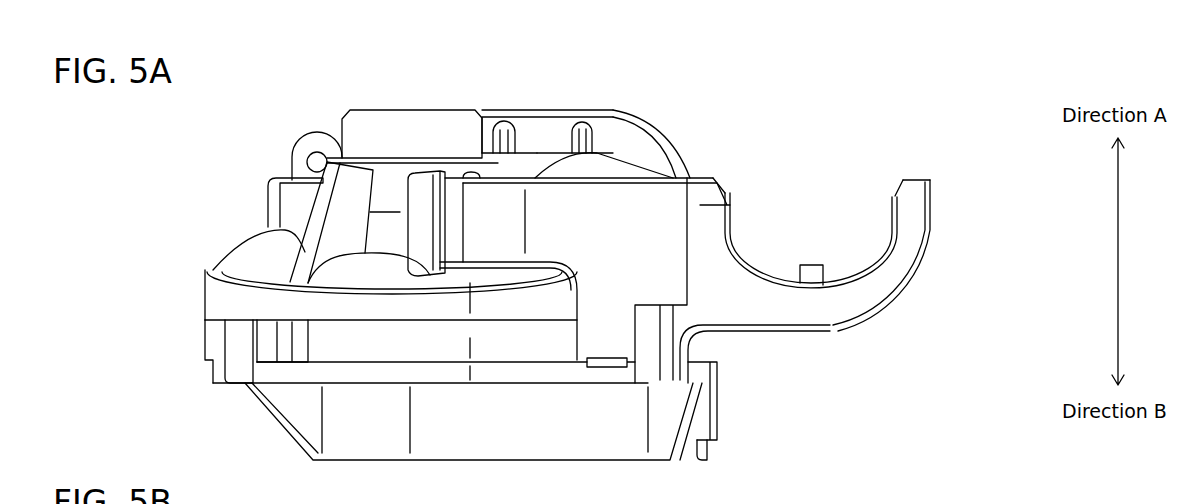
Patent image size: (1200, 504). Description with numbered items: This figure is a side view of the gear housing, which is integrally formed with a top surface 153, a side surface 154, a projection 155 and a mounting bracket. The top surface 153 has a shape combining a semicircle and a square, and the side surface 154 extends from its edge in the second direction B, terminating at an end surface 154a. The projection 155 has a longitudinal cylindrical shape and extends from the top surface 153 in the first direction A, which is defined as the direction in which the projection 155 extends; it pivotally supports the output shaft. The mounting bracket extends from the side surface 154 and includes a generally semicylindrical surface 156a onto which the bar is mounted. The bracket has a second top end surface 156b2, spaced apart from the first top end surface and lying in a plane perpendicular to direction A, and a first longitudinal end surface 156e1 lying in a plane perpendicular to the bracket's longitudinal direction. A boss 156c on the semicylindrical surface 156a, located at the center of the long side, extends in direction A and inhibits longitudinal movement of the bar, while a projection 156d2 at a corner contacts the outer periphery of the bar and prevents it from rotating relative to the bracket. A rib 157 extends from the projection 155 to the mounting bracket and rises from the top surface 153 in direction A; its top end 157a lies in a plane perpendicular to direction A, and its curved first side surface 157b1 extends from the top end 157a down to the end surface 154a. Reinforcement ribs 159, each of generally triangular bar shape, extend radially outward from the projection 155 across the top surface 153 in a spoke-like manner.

The top surface 153 is at (258, 273).
The side surface 154 is at (273, 310).
The end surface 154a is at (585, 362).
The projection 155 is at (362, 130).
The semicylindrical surface 156a is at (855, 273).
The second top end surface 156b2 is at (912, 182).
The boss 156c is at (812, 290).
The projection 156d2 is at (730, 200).
The first longitudinal end surface 156e1 is at (882, 275).
The rib 157 is at (697, 172).
The top end 157a is at (537, 178).
The first side surface 157b1 is at (547, 227).
The reinforcement ribs 159 is at (427, 213).